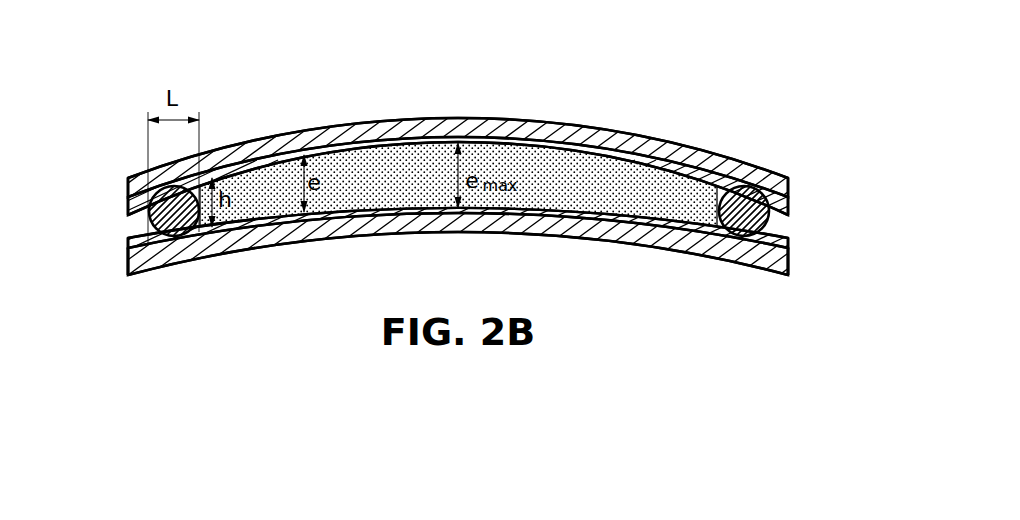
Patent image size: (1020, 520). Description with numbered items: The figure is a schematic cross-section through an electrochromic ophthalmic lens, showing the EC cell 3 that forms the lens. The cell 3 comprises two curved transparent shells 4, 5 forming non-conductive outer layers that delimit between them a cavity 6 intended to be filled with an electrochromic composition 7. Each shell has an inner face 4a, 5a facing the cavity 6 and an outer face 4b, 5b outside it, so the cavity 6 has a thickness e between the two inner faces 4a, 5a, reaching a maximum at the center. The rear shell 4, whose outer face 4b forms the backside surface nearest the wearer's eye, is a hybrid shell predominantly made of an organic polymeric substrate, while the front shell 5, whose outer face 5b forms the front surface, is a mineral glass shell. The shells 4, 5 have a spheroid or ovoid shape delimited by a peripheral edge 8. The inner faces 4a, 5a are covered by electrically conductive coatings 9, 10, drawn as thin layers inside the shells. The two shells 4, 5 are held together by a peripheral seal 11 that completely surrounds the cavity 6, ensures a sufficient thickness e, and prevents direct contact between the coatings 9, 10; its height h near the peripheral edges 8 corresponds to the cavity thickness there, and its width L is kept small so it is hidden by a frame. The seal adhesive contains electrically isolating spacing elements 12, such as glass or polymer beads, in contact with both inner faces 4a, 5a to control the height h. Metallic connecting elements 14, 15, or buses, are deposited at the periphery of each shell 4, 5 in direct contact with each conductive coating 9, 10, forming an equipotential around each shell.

The EC cell 3 is at (771, 114).
The transparent shell 4 is at (688, 238).
The inner face 4a is at (588, 208).
The outer face 4b is at (628, 249).
The transparent shell 5 is at (644, 145).
The inner face 5a is at (566, 150).
The outer face 5b is at (502, 115).
The cavity 6 is at (370, 170).
The electrochromic composition 7 is at (342, 195).
The peripheral edge 8 is at (792, 223).
The electrically conductive coating 9 is at (407, 213).
The electrically conductive coating 10 is at (428, 138).
The peripheral seal 11 is at (150, 250).
The spacing elements 12 is at (173, 226).
The connecting element 14 is at (143, 244).
The connecting element 15 is at (133, 209).